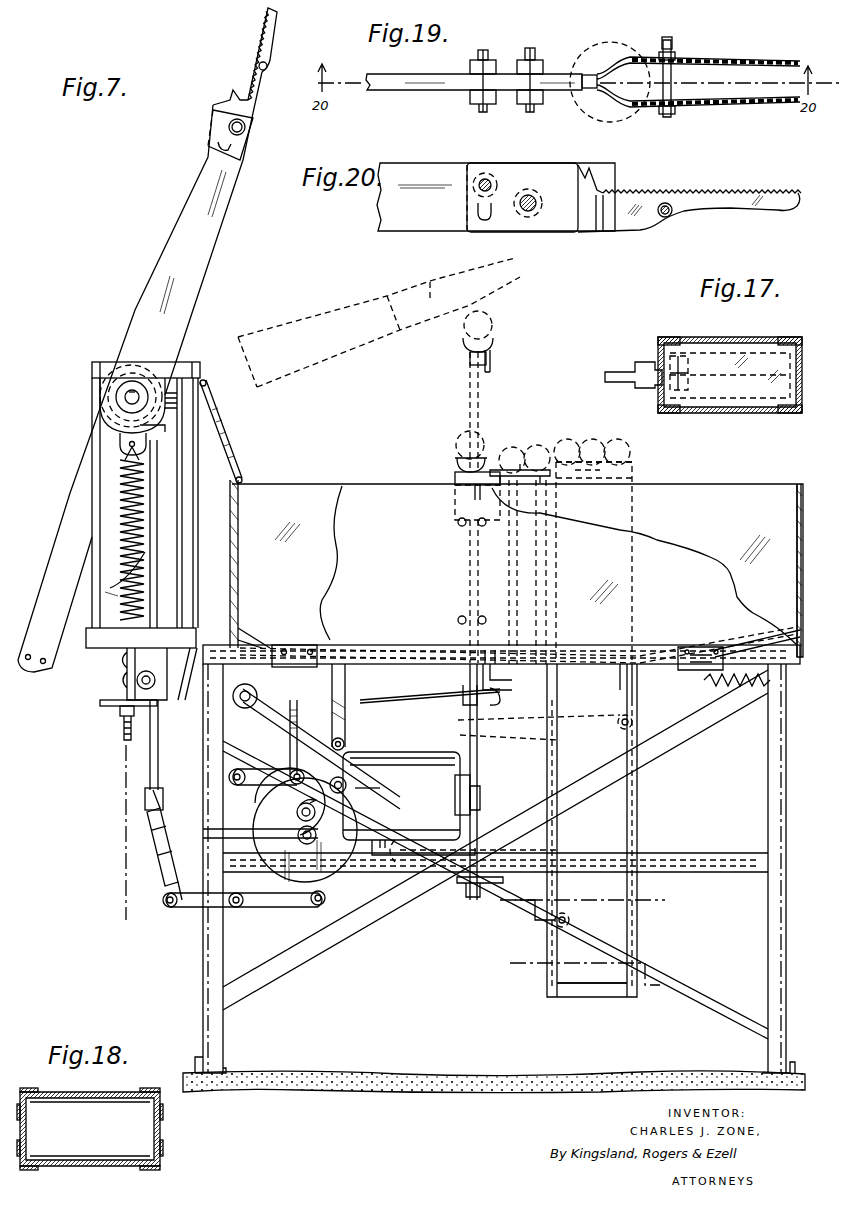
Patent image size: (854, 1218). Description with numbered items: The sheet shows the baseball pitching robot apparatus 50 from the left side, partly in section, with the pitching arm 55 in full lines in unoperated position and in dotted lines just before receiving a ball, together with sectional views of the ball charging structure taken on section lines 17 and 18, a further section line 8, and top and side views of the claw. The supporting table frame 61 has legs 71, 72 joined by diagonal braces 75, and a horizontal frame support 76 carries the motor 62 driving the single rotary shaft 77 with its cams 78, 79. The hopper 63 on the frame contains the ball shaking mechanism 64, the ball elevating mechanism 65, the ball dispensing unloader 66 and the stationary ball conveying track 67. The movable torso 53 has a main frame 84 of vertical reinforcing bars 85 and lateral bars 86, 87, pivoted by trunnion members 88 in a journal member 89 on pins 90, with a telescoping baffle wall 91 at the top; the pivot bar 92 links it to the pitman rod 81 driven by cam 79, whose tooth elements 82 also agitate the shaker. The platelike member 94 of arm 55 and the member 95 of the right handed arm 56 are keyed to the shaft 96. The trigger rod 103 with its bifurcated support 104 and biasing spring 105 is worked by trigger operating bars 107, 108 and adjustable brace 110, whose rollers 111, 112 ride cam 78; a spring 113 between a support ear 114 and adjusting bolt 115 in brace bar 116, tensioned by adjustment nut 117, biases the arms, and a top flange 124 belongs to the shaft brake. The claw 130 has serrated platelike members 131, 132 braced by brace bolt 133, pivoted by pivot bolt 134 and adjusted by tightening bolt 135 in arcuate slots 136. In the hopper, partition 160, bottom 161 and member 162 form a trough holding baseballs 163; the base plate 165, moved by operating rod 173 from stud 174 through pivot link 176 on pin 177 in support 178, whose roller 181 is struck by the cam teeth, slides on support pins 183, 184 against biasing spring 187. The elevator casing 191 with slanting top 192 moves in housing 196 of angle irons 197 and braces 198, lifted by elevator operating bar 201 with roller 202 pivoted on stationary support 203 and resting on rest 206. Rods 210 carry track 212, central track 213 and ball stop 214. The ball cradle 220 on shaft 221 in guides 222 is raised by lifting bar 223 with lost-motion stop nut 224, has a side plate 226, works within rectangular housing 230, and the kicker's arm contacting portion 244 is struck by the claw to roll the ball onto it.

In FIG. 7, the baseball pitching robot apparatus 50 is at (102, 281).
In FIG. 7, the movable torso 53 is at (84, 660).
In FIG. 19, the pitching arm 55 is at (416, 99).
In FIG. 20, the pitching arm 55 is at (373, 202).
In FIG. 7, the pitching arm 55 is at (148, 267).
In FIG. 7, the right handed arm 56 is at (62, 497).
In FIG. 7, the supporting table frame 61 is at (189, 982).
In FIG. 7, the motor 62 is at (422, 762).
In FIG. 7, the hopper 63 is at (795, 500).
In FIG. 7, the ball shaking mechanism 64 is at (411, 694).
In FIG. 7, the ball elevating mechanism 65 is at (636, 476).
In FIG. 7, the ball dispensing unloader 66 is at (446, 479).
In FIG. 7, the stationary ball conveying track 67 is at (522, 468).
In FIG. 7, the supporting leg 71 is at (206, 960).
In FIG. 7, the supporting leg 72 is at (770, 1046).
In FIG. 7, the diagonal braces 75 is at (722, 1005).
In FIG. 7, the horizontal frame support 76 is at (680, 855).
In FIG. 7, the rotary shaft 77 is at (318, 836).
In FIG. 7, the cam 78 is at (330, 872).
In FIG. 7, the cam 79 is at (282, 800).
In FIG. 7, the pitman rod 81 is at (280, 905).
In FIG. 7, the tooth elements 82 is at (345, 780).
In FIG. 7, the main frame 84 is at (206, 556).
In FIG. 7, the vertically extending reinforcing bars 85 is at (190, 477).
In FIG. 7, the laterally extending reinforcing bars 86 is at (196, 360).
In FIG. 7, the reinforcing bars 87 is at (197, 640).
In FIG. 7, the trunnion members 88 is at (130, 662).
In FIG. 7, the journal member 89 is at (192, 665).
In FIG. 7, the pins 90 is at (156, 681).
In FIG. 7, the telescoping baffle wall 91 is at (212, 440).
In FIG. 7, the pivot bar 92 is at (162, 805).
In FIG. 19, the elongated platelike member 94 is at (417, 73).
In FIG. 20, the elongated platelike member 94 is at (411, 170).
In FIG. 7, the elongated platelike member 94 is at (285, 325).
In FIG. 7, the arm member 95 is at (42, 602).
In FIG. 7, the shaft 96 is at (124, 398).
In FIG. 7, the trigger rod 103 is at (150, 770).
In FIG. 7, the bifurcated support 104 is at (168, 414).
In FIG. 7, the biasing spring 105 is at (152, 562).
In FIG. 7, the trigger operating bar 107 is at (243, 786).
In FIG. 7, the trigger operating bar 108 is at (195, 912).
In FIG. 7, the adjustable brace 110 is at (165, 878).
In FIG. 7, the roller 111 is at (293, 740).
In FIG. 7, the roller 112 is at (320, 906).
In FIG. 7, the spring 113 is at (144, 540).
In FIG. 7, the support ear 114 is at (120, 433).
In FIG. 7, the adjusting bolt 115 is at (127, 736).
In FIG. 7, the brace bar 116 is at (104, 706).
In FIG. 7, the adjustment nut 117 is at (124, 718).
In FIG. 7, the top flange 124 is at (180, 395).
In FIG. 19, the pitching hand or claw 130 is at (638, 126).
In FIG. 20, the pitching hand or claw 130 is at (634, 185).
In FIG. 7, the pitching hand or claw 130 is at (248, 36).
In FIG. 19, the serrated platelike member 131 is at (745, 59).
In FIG. 20, the serrated platelike member 131 is at (733, 193).
In FIG. 19, the serrated platelike member 132 is at (716, 103).
In FIG. 7, the serrated platelike member 132 is at (498, 286).
In FIG. 19, the brace bolt 133 is at (678, 96).
In FIG. 20, the brace bolt 133 is at (665, 218).
In FIG. 7, the brace bolt 133 is at (258, 67).
In FIG. 19, the pivot bolt 134 is at (534, 54).
In FIG. 20, the pivot bolt 134 is at (530, 190).
In FIG. 7, the pivot bolt 134 is at (247, 127).
In FIG. 19, the tightening bolt 135 is at (485, 56).
In FIG. 20, the tightening bolt 135 is at (485, 178).
In FIG. 7, the tightening bolt 135 is at (218, 150).
In FIG. 20, the arcuate slots 136 is at (476, 208).
In FIG. 7, the arcuate slots 136 is at (232, 150).
In FIG. 7, the forward partition 160 is at (245, 640).
In FIG. 7, the bottom 161 is at (752, 634).
In FIG. 7, the false bottom member 162 is at (790, 628).
In FIG. 19, the baseballs 163 is at (608, 48).
In FIG. 7, the baseballs 163 is at (490, 318).
In FIG. 7, the base plate 165 is at (690, 670).
In FIG. 7, the operating rod 173 is at (418, 706).
In FIG. 7, the stud 174 is at (500, 694).
In FIG. 7, the pivot link 176 is at (344, 746).
In FIG. 7, the pin 177 is at (345, 740).
In FIG. 7, the downwardly extending support 178 is at (338, 660).
In FIG. 7, the roller 181 is at (375, 786).
In FIG. 7, the support pin 183 is at (525, 675).
In FIG. 7, the support pin 184 is at (630, 670).
In FIG. 7, the biasing spring 187 is at (740, 690).
In FIG. 17, the box-like casing 191 is at (760, 342).
In FIG. 7, the box-like casing 191 is at (615, 822).
In FIG. 7, the slanting top 192 is at (605, 496).
In FIG. 17, the housing 196 is at (655, 329).
In FIG. 18, the housing 196 is at (178, 1147).
In FIG. 7, the housing 196 is at (648, 872).
In FIG. 17, the angle irons 197 is at (784, 416).
In FIG. 18, the angle irons 197 is at (40, 1181).
In FIG. 7, the angle irons 197 is at (632, 997).
In FIG. 18, the braces 198 is at (86, 1156).
In FIG. 7, the braces 198 is at (587, 995).
In FIG. 17, the elevator operating bar 201 is at (630, 370).
In FIG. 7, the elevator operating bar 201 is at (630, 940).
In FIG. 17, the roller 202 is at (690, 368).
In FIG. 7, the roller 202 is at (634, 722).
In FIG. 7, the stationary support 203 is at (248, 690).
In FIG. 17, the rest 206 is at (725, 393).
In FIG. 7, the rest 206 is at (556, 928).
In FIG. 7, the vertically extending rods 210 is at (540, 568).
In FIG. 7, the outer parallel track 212 is at (572, 460).
In FIG. 7, the central relatively lower track 213 is at (562, 485).
In FIG. 7, the L-shaped ball stop 214 is at (512, 515).
In FIG. 7, the ball cradle 220 is at (462, 338).
In FIG. 7, the vertically extending shaft 221 is at (472, 395).
In FIG. 7, the guides 222 is at (458, 618).
In FIG. 7, the lifting bar 223 is at (495, 905).
In FIG. 7, the stop nut 224 is at (484, 815).
In FIG. 7, the plate 226 is at (470, 448).
In FIG. 7, the rectangular housing 230 is at (457, 510).
In FIG. 7, the robot arm contacting portion 244 is at (492, 358).
In FIG. 7, the section line 8 is at (134, 929).
In FIG. 7, the section line 17- 17 is at (669, 904).
In FIG. 7, the section line 18- 18 is at (669, 997).